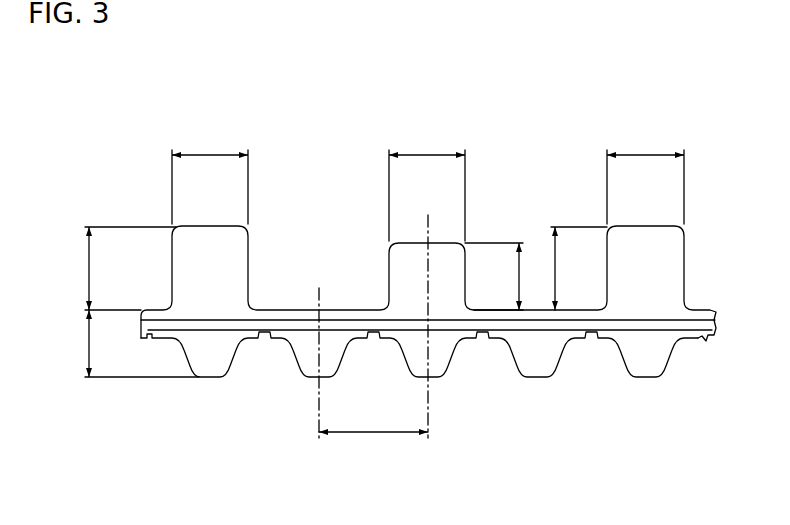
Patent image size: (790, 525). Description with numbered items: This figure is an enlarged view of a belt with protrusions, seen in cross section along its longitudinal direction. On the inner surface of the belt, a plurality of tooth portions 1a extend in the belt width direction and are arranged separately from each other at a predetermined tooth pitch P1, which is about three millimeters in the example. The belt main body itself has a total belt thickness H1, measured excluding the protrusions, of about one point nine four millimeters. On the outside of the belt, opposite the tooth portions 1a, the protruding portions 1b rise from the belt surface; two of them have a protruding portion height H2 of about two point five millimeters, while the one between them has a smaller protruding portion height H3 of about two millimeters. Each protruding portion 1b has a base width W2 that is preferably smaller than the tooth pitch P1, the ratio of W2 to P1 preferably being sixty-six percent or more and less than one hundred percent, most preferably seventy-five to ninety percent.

The tooth portions 1a is at (537, 372).
The protruding portions 1b is at (207, 236).
The base width W2 is at (428, 187).
The total belt thickness H1 is at (132, 343).
The protruding portion height H2 is at (336, 268).
The protruding portion height H3 is at (494, 276).
The tooth pitch P1 is at (373, 326).